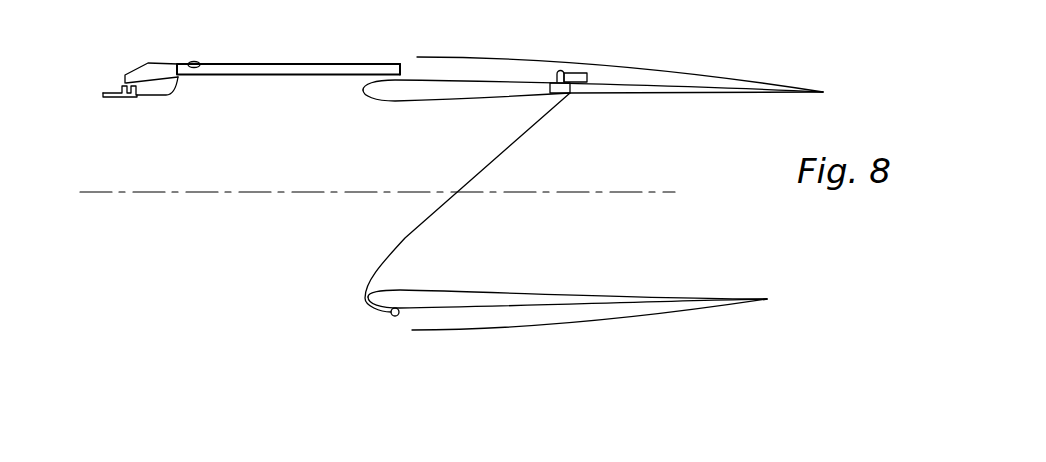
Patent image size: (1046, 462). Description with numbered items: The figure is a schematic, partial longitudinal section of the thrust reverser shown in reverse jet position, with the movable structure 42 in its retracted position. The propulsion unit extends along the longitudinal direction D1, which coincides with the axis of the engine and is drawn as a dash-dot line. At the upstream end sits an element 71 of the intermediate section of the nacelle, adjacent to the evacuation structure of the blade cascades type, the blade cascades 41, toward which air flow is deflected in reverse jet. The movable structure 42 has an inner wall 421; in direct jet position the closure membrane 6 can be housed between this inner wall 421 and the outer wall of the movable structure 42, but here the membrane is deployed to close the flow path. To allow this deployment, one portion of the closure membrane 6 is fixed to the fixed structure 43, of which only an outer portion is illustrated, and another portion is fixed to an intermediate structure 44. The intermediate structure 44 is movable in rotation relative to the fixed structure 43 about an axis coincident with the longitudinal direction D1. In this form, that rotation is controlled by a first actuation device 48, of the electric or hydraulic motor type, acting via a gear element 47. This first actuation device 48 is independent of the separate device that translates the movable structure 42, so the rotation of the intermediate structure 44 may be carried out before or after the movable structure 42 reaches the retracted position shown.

The blade cascades 41 is at (275, 64).
The movable structure 42 is at (680, 72).
The inner wall of the movable structure 421 is at (392, 90).
The fixed structure 43 is at (403, 64).
The intermediate structure 44 is at (562, 94).
The gear element 47 is at (554, 70).
The first actuation device 48 is at (574, 72).
The closure membrane 6 is at (421, 224).
The element of the intermediate section 71 is at (110, 98).
The longitudinal direction D1 is at (99, 193).